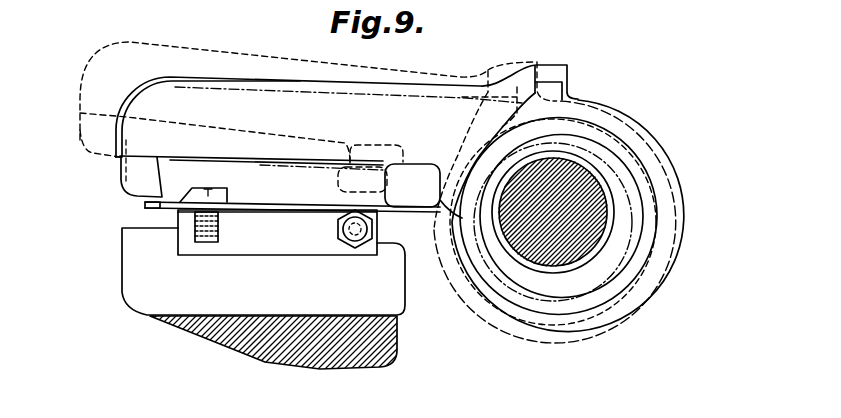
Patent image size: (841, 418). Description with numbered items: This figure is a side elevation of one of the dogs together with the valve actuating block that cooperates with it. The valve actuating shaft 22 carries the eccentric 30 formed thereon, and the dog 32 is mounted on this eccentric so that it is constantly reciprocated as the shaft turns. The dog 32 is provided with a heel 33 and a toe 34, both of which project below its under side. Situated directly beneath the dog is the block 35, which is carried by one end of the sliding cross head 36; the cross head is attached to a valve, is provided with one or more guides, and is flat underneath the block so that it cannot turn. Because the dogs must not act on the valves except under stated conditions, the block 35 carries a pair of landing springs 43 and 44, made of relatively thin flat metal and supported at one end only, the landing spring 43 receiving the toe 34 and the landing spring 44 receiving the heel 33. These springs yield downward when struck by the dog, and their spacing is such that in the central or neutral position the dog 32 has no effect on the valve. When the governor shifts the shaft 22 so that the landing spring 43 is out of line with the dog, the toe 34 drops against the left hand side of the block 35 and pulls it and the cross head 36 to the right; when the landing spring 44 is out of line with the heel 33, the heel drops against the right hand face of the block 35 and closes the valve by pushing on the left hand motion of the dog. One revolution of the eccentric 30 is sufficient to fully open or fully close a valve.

The valve actuating shaft 22 is at (597, 240).
The eccentric 30 is at (630, 211).
The dog 32 is at (329, 136).
The heel 33 is at (402, 197).
The toe 34 is at (132, 175).
The block 35 is at (277, 232).
The sliding cross head 36 is at (277, 300).
The landing spring 43 is at (152, 207).
The landing spring 44 is at (304, 205).